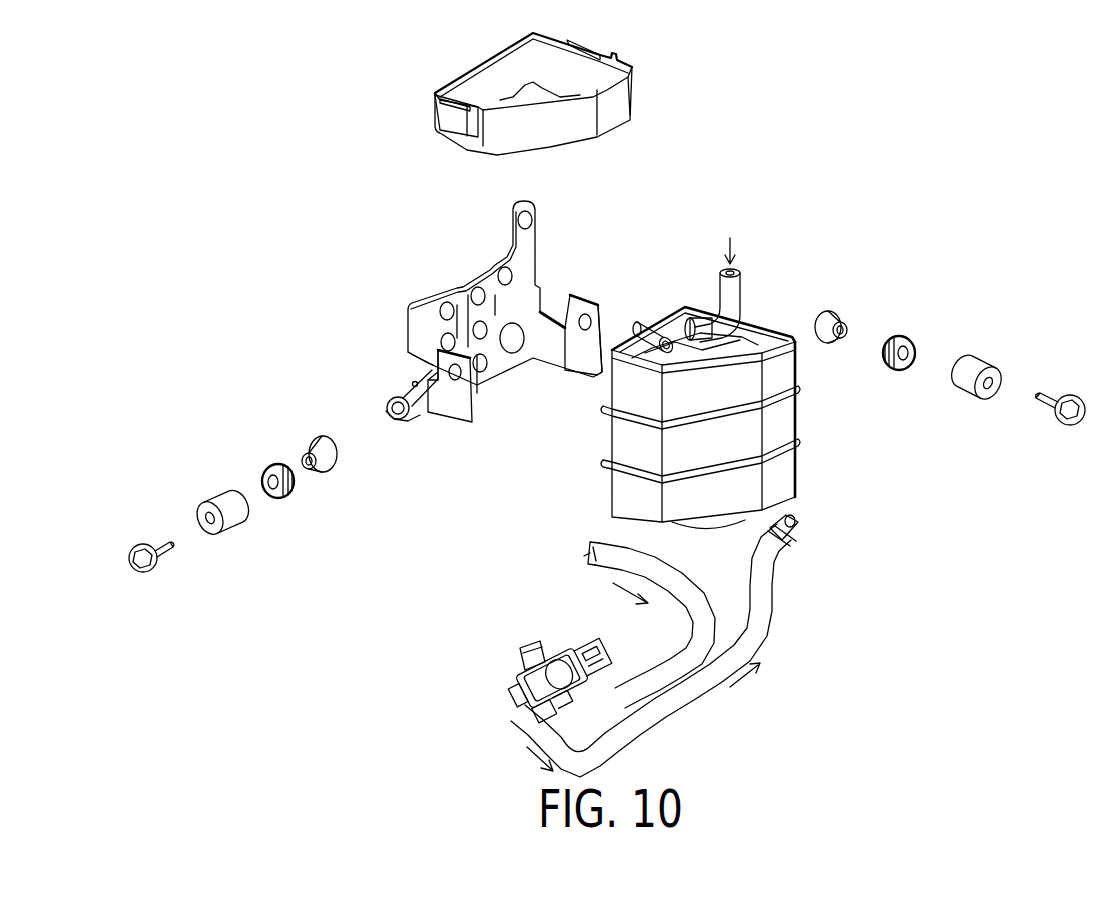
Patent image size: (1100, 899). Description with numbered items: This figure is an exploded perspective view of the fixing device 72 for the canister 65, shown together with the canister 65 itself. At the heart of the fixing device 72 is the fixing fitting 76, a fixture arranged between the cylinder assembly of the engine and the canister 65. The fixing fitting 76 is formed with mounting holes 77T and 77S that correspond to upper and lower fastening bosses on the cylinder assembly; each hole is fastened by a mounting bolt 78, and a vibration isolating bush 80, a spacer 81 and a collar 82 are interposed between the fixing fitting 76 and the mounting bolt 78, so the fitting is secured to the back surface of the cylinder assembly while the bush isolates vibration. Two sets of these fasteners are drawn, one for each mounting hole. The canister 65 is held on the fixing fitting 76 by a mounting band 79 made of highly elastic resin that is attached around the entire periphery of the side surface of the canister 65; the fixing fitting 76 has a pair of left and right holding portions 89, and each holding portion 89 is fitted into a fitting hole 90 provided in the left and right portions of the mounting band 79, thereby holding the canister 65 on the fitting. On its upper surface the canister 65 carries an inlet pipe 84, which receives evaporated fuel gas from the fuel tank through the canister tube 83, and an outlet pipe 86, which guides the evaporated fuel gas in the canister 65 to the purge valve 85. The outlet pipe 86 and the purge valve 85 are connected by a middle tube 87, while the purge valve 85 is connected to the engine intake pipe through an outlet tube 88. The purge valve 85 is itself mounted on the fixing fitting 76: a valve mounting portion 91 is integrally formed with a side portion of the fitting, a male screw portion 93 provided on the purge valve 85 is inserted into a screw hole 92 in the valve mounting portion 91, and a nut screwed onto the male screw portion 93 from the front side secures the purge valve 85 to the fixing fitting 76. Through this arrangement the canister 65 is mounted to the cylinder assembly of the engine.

The fixing device 72 is at (400, 172).
The mounting band 79 is at (632, 100).
The fitting hole 90 is at (452, 92).
The fixing fitting 76 is at (408, 330).
The mounting hole 77T is at (532, 205).
The mounting hole 77S is at (400, 420).
The holding portion 89 is at (578, 298).
The valve mounting portion 91 is at (401, 394).
The screw hole 92 is at (430, 388).
The canister 65 is at (785, 470).
The canister tube 83 is at (740, 306).
The inlet pipe 84 is at (700, 322).
The outlet pipe 86 is at (657, 328).
The collar 82 is at (833, 315).
The spacer 81 is at (903, 338).
The vibration isolating bush 80 is at (982, 365).
The mounting bolt 78 is at (1050, 398).
The middle tube 87 is at (656, 672).
The outlet tube 88 is at (700, 688).
The purge valve 85 is at (527, 690).
The male screw portion 93 is at (521, 652).